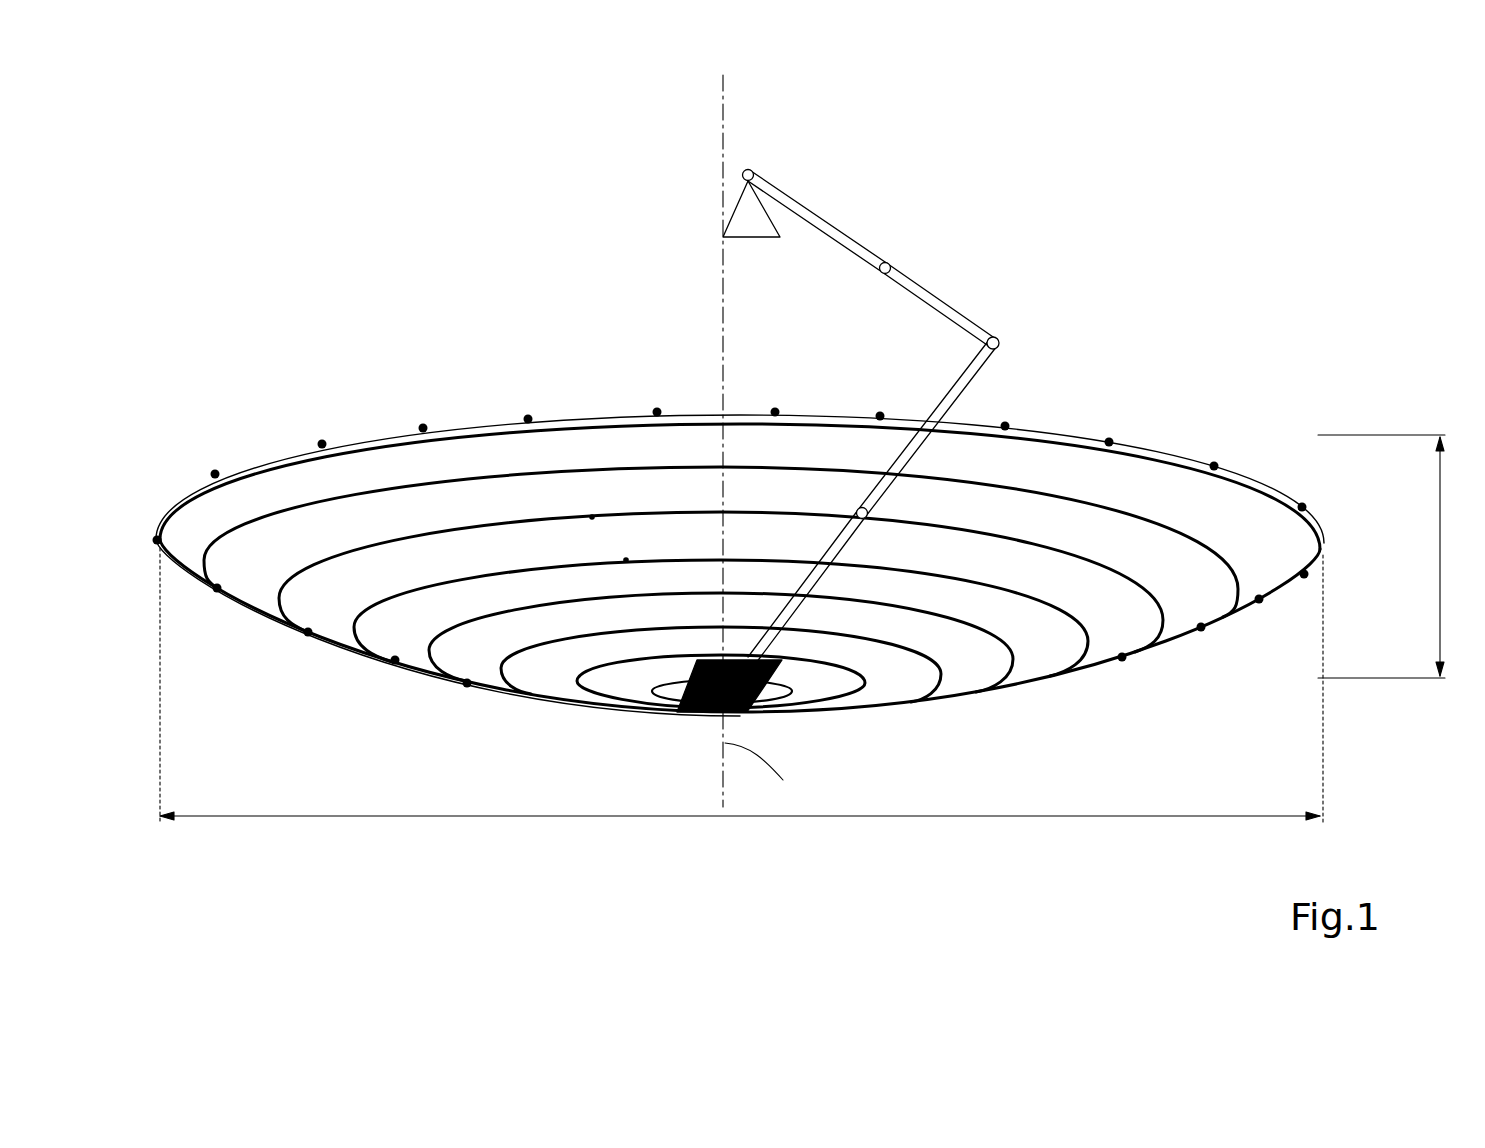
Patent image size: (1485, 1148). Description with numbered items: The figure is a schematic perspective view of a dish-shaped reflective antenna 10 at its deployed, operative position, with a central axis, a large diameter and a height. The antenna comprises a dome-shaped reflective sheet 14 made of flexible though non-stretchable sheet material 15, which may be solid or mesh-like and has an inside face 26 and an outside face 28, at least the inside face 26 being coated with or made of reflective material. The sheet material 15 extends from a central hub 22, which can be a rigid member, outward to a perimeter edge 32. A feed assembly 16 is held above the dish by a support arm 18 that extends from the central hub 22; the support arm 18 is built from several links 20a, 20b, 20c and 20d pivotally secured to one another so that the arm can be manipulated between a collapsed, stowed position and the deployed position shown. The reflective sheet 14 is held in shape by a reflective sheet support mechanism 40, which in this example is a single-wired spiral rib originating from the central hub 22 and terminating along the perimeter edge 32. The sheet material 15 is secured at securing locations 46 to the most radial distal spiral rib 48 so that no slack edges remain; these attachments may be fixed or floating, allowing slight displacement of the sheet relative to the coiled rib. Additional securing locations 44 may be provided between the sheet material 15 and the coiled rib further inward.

The reflective antenna 10 is at (331, 230).
The reflective sheet 14 is at (345, 433).
The sheet material 15 is at (1048, 487).
The feed assembly 16 is at (690, 206).
The support arm 18 is at (1032, 322).
The link 20a is at (813, 215).
The link 20b is at (930, 297).
The link 20c is at (963, 389).
The link 20d is at (838, 543).
The central hub 22 is at (773, 688).
The inside face 26 is at (450, 462).
The outside face 28 is at (1240, 612).
The perimeter edge 32 is at (260, 460).
The reflective sheet support mechanism 40 is at (357, 550).
The securing locations 44 is at (626, 560).
The securing locations 46 is at (424, 420).
The most radial distal spiral rib 48 is at (592, 515).